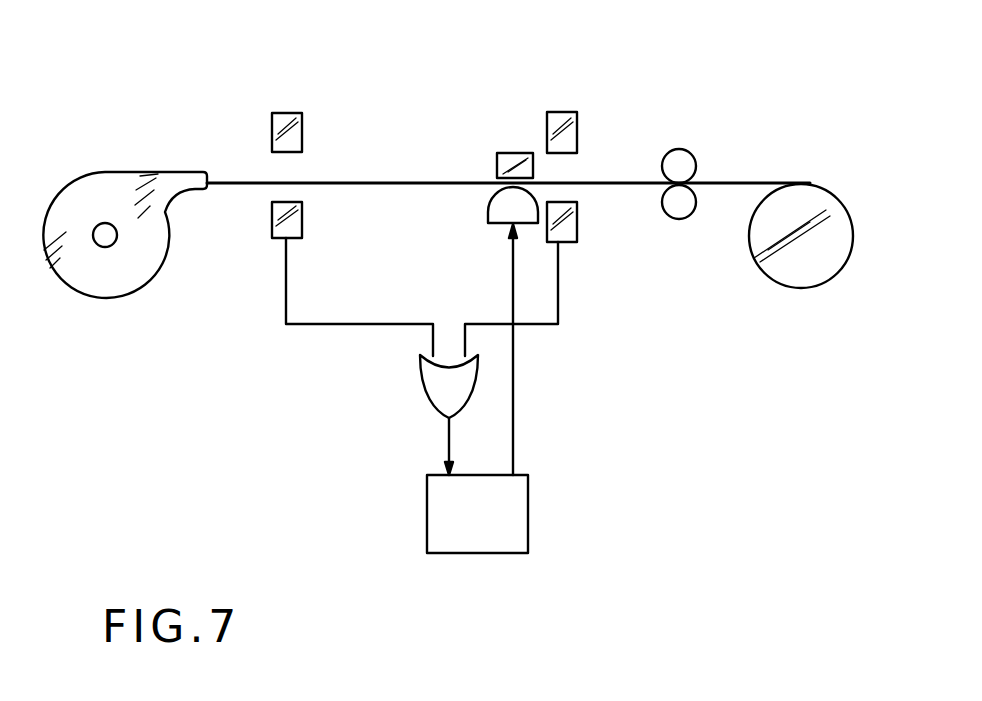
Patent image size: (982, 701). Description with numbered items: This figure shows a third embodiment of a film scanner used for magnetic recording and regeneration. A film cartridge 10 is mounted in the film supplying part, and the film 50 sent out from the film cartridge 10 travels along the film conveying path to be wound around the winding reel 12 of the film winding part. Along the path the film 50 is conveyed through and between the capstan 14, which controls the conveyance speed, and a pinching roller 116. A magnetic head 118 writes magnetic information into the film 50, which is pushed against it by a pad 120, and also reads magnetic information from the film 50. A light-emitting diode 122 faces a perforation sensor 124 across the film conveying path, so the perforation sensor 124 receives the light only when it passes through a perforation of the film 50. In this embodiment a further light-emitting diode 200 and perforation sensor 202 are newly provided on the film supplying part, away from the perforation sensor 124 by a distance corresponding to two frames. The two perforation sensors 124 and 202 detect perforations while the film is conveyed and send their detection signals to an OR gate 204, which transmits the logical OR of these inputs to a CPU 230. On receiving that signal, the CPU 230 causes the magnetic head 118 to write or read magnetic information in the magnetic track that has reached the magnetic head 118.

The film cartridge 10 is at (105, 292).
The winding reel 12 is at (797, 288).
The capstan 14 is at (677, 220).
The film 50 is at (768, 183).
The pinching roller 116 is at (688, 150).
The magnetic head 118 is at (503, 213).
The pad 120 is at (493, 150).
The light-emitting diode 122 is at (568, 110).
The perforation sensor 124 is at (572, 244).
The light-emitting diode 200 is at (290, 112).
The perforation sensor 202 is at (272, 240).
The OR gate 204 is at (440, 395).
The CPU 230 is at (477, 553).